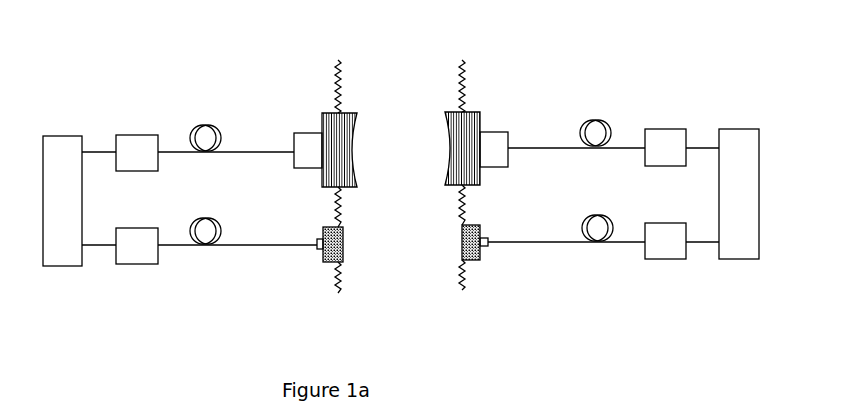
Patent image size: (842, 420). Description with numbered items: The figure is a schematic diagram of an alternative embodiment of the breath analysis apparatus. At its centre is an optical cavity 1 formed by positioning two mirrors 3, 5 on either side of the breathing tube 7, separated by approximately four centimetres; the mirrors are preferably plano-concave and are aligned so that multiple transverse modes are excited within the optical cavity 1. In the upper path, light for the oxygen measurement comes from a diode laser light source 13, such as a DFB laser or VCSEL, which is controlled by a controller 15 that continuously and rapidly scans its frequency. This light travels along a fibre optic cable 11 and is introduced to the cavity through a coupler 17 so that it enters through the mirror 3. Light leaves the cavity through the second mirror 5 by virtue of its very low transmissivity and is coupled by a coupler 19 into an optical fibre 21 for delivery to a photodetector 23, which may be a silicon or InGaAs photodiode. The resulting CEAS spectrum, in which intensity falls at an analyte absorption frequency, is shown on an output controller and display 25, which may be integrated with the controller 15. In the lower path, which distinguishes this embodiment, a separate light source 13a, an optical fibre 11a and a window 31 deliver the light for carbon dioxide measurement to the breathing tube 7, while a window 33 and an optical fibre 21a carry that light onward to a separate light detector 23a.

The optical cavity 1 is at (400, 152).
The mirror 3 is at (354, 134).
The second mirror 5 is at (447, 136).
The breathing tube 7 is at (466, 62).
The fibre optic cable 11 is at (235, 146).
The optical fibre 11a is at (258, 251).
The diode laser light source 13 is at (120, 153).
The separate light source 13a is at (120, 246).
The controller 15 is at (62, 201).
The coupler 17 is at (308, 150).
The coupler 19 is at (494, 149).
The optical fibre 21 is at (555, 143).
The optical fibre 21a is at (571, 249).
The photodetector 23 is at (682, 147).
The separate light detector 23a is at (682, 241).
The output controller and display 25 is at (739, 194).
The window 31 is at (346, 247).
The window 33 is at (484, 266).